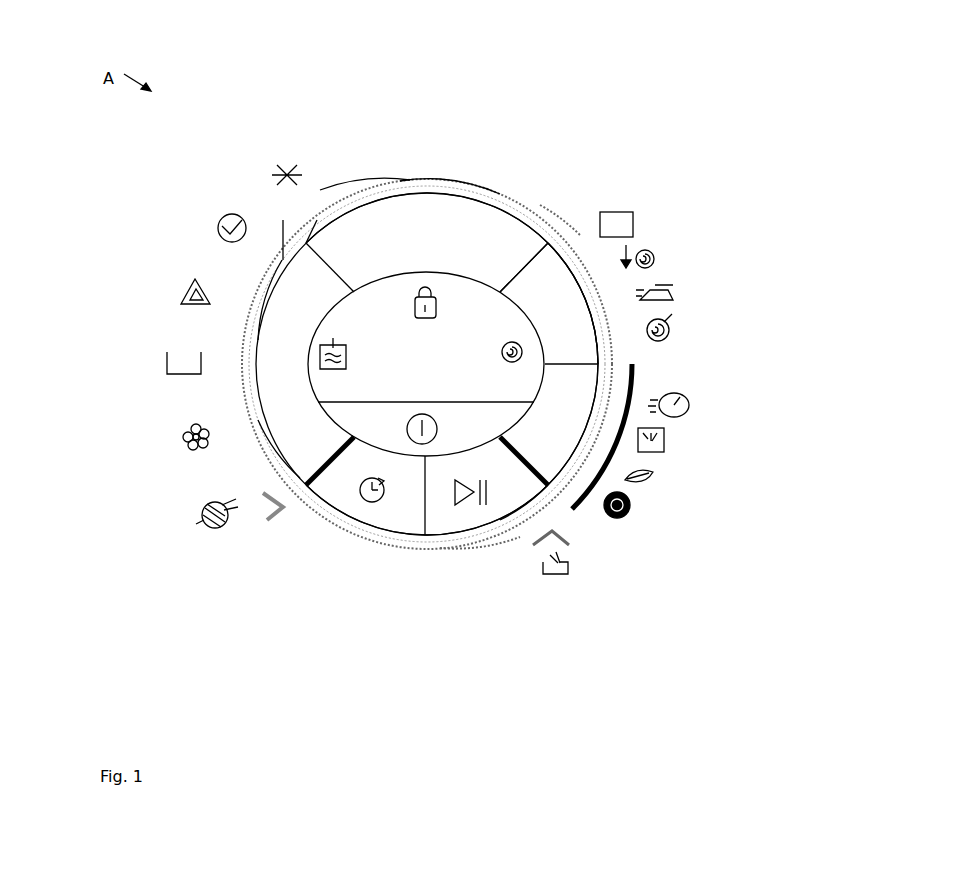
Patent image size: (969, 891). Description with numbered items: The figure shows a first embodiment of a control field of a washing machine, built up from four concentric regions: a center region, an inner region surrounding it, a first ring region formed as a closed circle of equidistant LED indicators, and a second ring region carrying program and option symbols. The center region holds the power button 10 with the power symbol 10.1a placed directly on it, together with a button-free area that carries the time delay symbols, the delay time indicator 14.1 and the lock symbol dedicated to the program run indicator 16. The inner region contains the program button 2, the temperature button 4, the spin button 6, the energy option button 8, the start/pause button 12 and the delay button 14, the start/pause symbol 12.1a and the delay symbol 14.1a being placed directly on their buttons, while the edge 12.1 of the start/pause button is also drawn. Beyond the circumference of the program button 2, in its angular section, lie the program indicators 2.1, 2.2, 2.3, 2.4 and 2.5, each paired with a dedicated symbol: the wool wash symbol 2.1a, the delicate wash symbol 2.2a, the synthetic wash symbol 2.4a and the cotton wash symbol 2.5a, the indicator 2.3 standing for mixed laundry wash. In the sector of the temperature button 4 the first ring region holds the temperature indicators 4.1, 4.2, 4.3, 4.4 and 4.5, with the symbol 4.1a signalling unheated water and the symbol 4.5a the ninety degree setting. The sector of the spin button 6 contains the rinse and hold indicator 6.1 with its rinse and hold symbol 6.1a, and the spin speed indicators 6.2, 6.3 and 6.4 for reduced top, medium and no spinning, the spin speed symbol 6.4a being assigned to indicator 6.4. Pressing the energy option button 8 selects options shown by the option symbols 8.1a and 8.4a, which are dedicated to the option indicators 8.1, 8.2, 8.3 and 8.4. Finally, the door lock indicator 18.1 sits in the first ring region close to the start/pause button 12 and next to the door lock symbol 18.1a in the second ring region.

The program button 2 is at (284, 398).
The program indicator 2.1 is at (283, 465).
The wool wash program symbol 2.1a is at (203, 521).
The program indicator 2.2 is at (253, 417).
The delicate wash program symbol 2.2a is at (187, 435).
The program indicator 2.3 is at (247, 360).
The program indicator 2.4 is at (253, 313).
The synthetic wash program symbol 2.4a is at (200, 293).
The program indicator 2.5 is at (317, 220).
The cotton wash program symbol 2.5a is at (220, 228).
The temperature button 4 is at (438, 202).
The temperature indicator 4.1 is at (283, 220).
The temperature symbol 4.1a is at (287, 170).
The temperature indicator 4.2 is at (365, 190).
The temperature indicator 4.3 is at (420, 185).
The temperature indicator 4.4 is at (475, 193).
The temperature indicator 4.5 is at (570, 258).
The temperature symbol 4.5a is at (570, 157).
The spin button 6 is at (570, 305).
The rinse and hold indicator 6.1 is at (540, 220).
The rinse and hold symbol 6.1a is at (617, 222).
The spin speed indicator 6.2 is at (598, 275).
The spin speed indicator 6.3 is at (600, 305).
The spin speed indicator 6.4 is at (610, 352).
The spin speed symbol 6.4a is at (670, 332).
The energy option button 8 is at (553, 437).
The energy option indicator 8.1 is at (598, 370).
The energy option symbol 8.1a is at (693, 407).
The energy option indicator 8.2 is at (590, 425).
The energy option indicator 8.3 is at (580, 465).
The energy option indicator 8.4 is at (533, 507).
The energy option symbol 8.4a is at (633, 512).
The power button 10 is at (387, 377).
The power symbol 10.1a is at (377, 427).
The start/pause button 12 is at (458, 520).
The start/pause segment edge 12.1 is at (505, 530).
The start/pause symbol 12.1a is at (460, 500).
The delay button 14 is at (403, 520).
The delay time indicator 14.1 is at (313, 435).
The delay symbol 14.1a is at (377, 505).
The program run indicator 16 is at (421, 272).
The door lock indicator 18.1 is at (560, 483).
The door lock symbol 18.1a is at (560, 565).